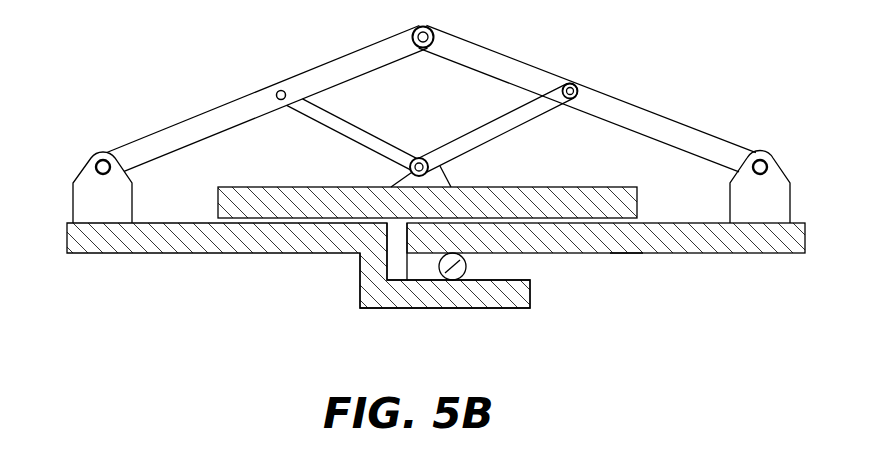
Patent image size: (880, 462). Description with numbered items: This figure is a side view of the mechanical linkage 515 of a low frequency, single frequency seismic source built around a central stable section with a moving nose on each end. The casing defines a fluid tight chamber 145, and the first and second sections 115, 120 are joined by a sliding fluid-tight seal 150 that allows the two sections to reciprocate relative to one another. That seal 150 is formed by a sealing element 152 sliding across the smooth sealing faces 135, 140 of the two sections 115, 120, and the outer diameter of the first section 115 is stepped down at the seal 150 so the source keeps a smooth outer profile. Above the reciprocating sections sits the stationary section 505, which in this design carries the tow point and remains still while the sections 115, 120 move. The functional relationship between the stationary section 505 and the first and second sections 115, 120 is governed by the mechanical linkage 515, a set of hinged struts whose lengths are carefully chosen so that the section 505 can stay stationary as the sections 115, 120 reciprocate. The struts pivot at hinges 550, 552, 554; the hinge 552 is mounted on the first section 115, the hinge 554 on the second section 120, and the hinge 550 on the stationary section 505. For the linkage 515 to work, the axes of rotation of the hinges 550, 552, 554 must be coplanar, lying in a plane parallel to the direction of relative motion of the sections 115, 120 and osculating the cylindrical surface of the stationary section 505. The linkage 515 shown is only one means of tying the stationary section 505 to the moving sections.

The first section 115 is at (92, 254).
The second section 120 is at (708, 255).
The smooth sealing face 135 is at (406, 255).
The smooth sealing face 140 is at (402, 276).
The fluid tight chamber 145 is at (643, 298).
The sliding fluid-tight seal 150 is at (402, 293).
The sealing element 152 is at (467, 267).
The stationary section 505 is at (327, 187).
The mechanical linkage 515 is at (551, 46).
The hinge 550 is at (417, 157).
The hinge 552 is at (85, 165).
The hinge 554 is at (780, 166).